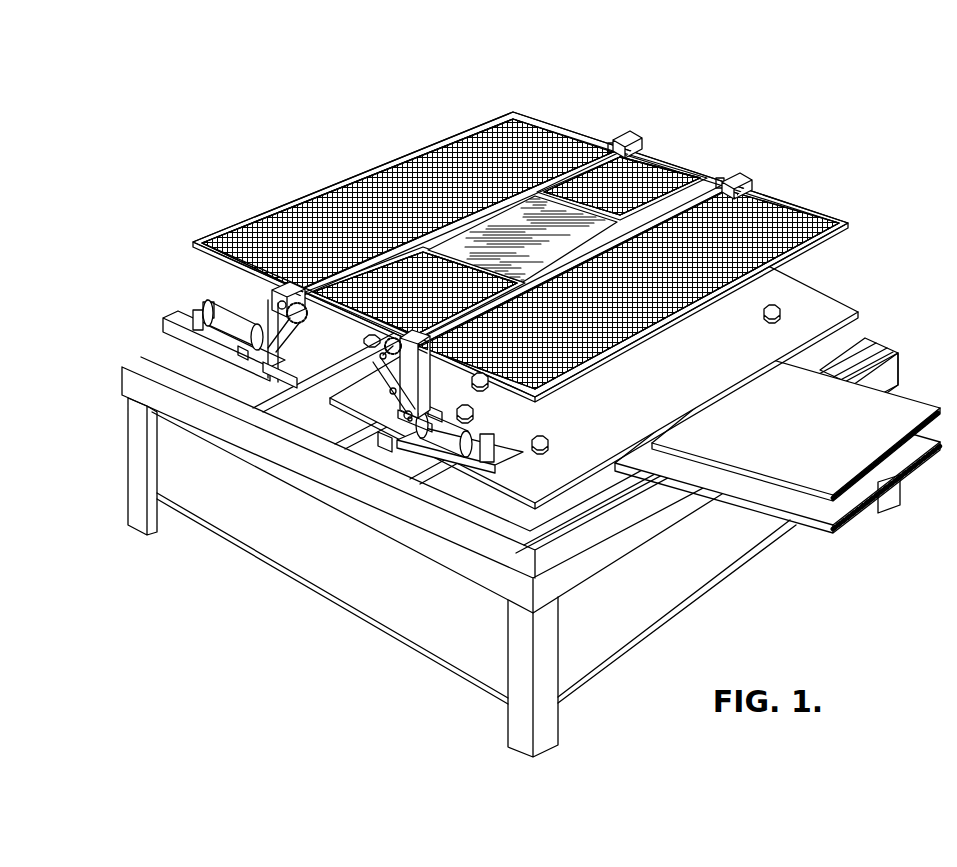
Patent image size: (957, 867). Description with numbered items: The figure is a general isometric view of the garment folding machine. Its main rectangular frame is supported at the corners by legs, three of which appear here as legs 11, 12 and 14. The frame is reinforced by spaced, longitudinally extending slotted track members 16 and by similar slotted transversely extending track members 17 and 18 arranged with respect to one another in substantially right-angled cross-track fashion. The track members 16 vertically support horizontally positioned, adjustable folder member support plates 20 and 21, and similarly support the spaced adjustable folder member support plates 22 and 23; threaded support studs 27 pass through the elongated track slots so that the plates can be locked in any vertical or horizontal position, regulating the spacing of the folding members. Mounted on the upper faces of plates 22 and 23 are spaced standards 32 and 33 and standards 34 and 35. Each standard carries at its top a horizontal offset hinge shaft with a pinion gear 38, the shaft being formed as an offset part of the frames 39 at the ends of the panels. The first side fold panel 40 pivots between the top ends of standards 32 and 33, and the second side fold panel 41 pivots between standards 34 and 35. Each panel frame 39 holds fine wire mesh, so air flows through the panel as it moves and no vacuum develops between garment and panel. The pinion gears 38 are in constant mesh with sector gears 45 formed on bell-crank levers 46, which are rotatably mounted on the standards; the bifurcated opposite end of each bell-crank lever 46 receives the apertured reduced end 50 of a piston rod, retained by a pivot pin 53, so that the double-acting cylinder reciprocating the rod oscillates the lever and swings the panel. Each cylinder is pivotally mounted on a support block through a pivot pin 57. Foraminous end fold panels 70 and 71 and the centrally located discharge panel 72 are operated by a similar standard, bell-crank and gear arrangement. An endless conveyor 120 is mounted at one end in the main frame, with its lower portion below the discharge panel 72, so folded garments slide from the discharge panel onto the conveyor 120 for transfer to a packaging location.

The leg 11 is at (556, 652).
The leg 12 is at (900, 492).
The leg 14 is at (126, 445).
The longitudinally extending slotted track member 16 is at (318, 432).
The transversely extending slotted track member 17 is at (855, 340).
The transversely extending slotted track member 18 is at (585, 522).
The adjustable folder member support plate 20 is at (318, 352).
The adjustable folder member support plate 21 is at (447, 415).
The adjustable folder member support plate 22 is at (239, 326).
The adjustable folder member support plate 23 is at (808, 300).
The threaded support stud 27 is at (484, 388).
The standard 32 is at (432, 368).
The standard 33 is at (752, 187).
The standard 34 is at (298, 327).
The standard 35 is at (636, 136).
The pinion gear 38 is at (365, 344).
The frame 39 is at (618, 136).
The first side fold panel 40 is at (603, 350).
The second side fold panel 41 is at (395, 155).
The sector gear 45 is at (404, 417).
The bell-crank lever 46 is at (390, 392).
The reduced apertured end of piston rod 50 is at (437, 418).
The pivot pin 53 is at (382, 446).
The pivot pin 57 is at (198, 312).
The end fold panel 70 is at (650, 162).
The end fold panel 71 is at (445, 262).
The central discharge panel 72 is at (545, 253).
The endless conveyor 120 is at (808, 430).